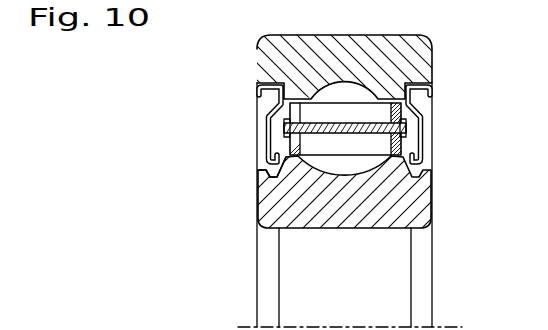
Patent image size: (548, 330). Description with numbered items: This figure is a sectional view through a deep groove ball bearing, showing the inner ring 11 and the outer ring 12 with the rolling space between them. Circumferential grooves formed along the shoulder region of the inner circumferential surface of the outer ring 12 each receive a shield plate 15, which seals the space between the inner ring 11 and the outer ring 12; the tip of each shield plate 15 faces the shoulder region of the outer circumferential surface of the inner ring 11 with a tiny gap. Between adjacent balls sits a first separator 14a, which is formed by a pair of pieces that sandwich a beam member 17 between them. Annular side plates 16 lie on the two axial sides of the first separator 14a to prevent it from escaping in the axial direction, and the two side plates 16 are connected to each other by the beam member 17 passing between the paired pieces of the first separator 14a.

The inner ring 11 is at (413, 218).
The outer ring 12 is at (416, 53).
The first separator 14a is at (358, 116).
The shield plate 15 is at (264, 118).
The annular side plate 16 is at (270, 172).
The beam member 17 is at (284, 128).